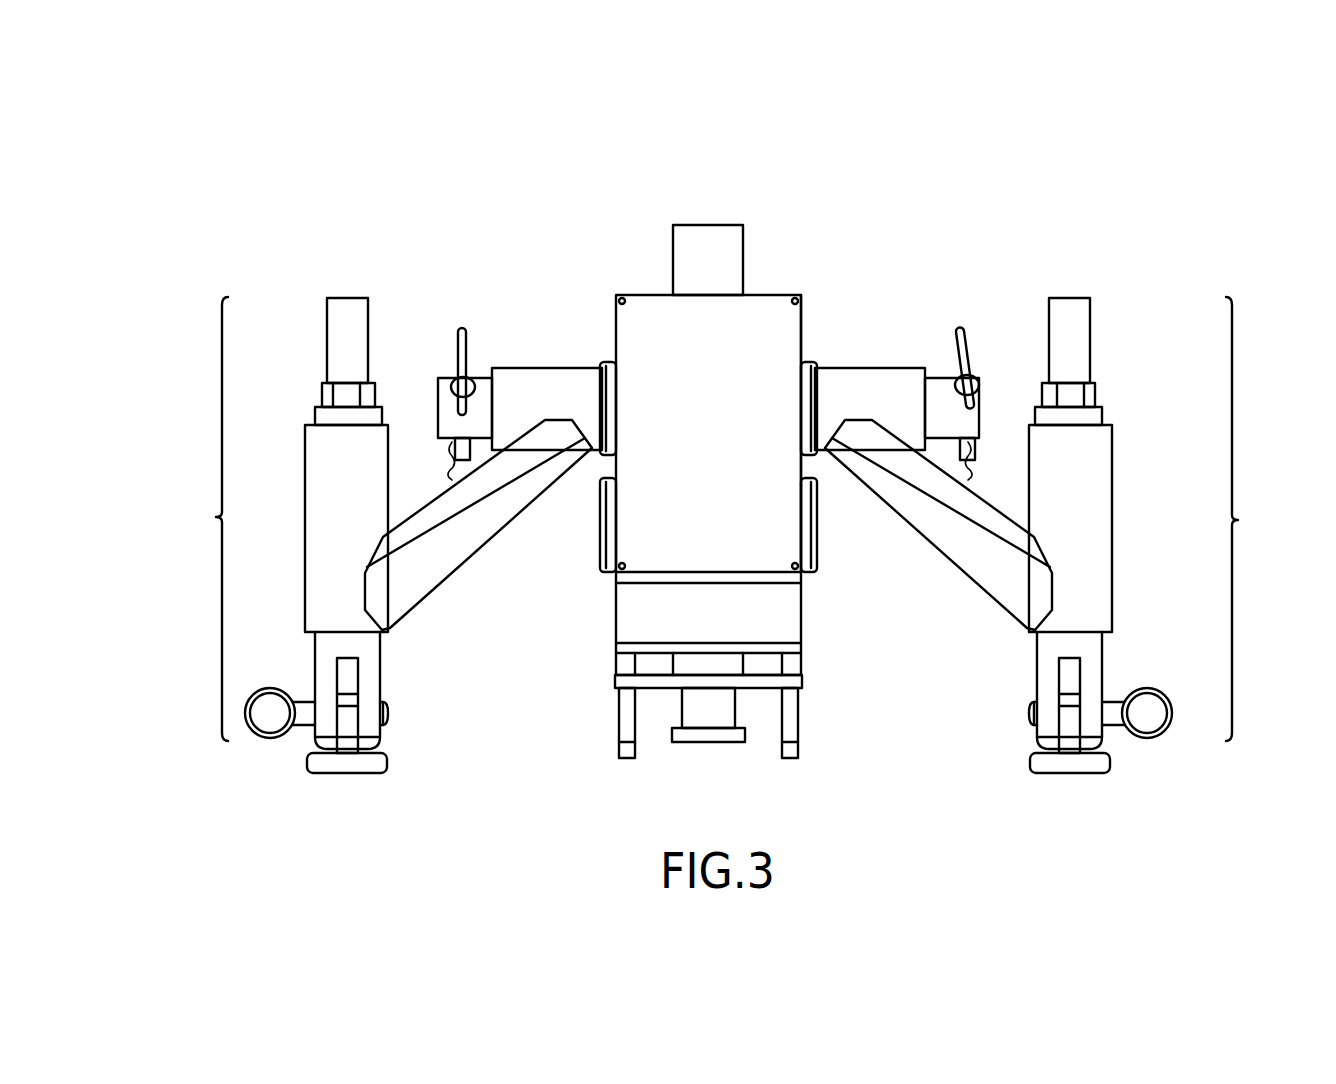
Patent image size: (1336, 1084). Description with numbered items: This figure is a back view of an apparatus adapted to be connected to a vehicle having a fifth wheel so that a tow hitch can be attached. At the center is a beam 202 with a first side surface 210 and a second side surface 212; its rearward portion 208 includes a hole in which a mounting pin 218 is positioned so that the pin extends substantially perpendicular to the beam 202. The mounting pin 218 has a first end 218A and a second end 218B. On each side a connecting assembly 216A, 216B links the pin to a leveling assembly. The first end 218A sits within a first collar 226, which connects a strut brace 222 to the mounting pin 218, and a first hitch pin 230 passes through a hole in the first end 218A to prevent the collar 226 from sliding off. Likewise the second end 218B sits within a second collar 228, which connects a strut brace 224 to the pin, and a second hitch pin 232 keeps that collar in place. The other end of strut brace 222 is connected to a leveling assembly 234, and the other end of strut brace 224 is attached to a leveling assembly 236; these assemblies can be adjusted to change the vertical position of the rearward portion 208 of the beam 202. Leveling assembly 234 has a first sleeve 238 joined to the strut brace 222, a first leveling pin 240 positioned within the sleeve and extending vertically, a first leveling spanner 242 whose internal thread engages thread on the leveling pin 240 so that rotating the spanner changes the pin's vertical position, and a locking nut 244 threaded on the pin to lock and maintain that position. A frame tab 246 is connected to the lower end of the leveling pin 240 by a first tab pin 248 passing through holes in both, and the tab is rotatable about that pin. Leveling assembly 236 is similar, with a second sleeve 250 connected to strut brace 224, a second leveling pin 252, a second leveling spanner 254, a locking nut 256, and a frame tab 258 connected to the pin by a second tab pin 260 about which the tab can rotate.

The beam 202 is at (766, 295).
The rearward portion 208 is at (858, 179).
The first side surface 210 is at (616, 318).
The second side surface 212 is at (803, 328).
The connecting assembly 216A is at (314, 271).
The connecting assembly 216B is at (1180, 255).
The first end of mounting pin 218A is at (534, 279).
The second end of mounting pin 218B is at (929, 278).
The mounting pin 218 is at (978, 420).
The strut brace 222 is at (497, 532).
The strut brace 224 is at (953, 558).
The first collar 226 is at (543, 368).
The second collar 228 is at (842, 368).
The first hitch pin 230 is at (461, 328).
The second hitch pin 232 is at (965, 330).
The leveling assembly 234 is at (214, 517).
The leveling assembly 236 is at (1240, 520).
The first sleeve 238 is at (305, 555).
The first leveling pin 240 is at (348, 298).
The first leveling spanner 242 is at (315, 416).
The locking nut 244 is at (322, 397).
The frame tab 246 is at (276, 768).
The first tab pin 248 is at (305, 700).
The second sleeve 250 is at (1112, 548).
The second leveling pin 252 is at (1069, 298).
The second leveling spanner 254 is at (1105, 416).
The locking nut 256 is at (1097, 390).
The frame tab 258 is at (1138, 761).
The second tab pin 260 is at (1110, 700).